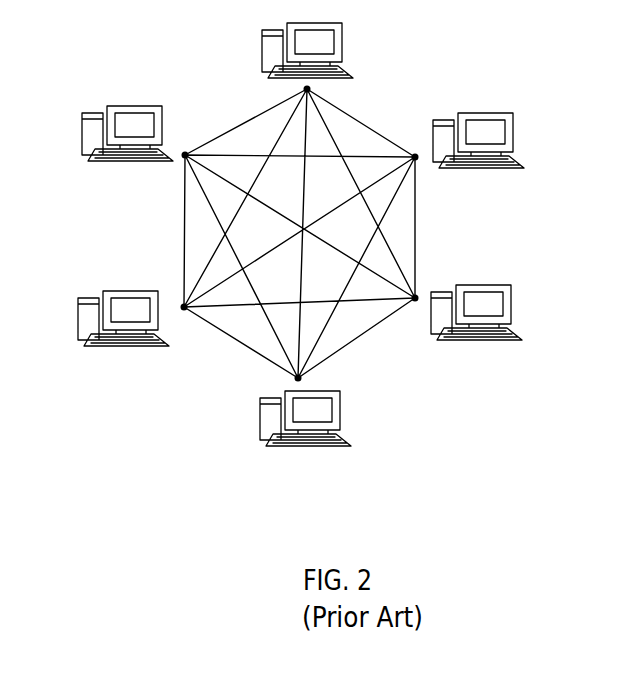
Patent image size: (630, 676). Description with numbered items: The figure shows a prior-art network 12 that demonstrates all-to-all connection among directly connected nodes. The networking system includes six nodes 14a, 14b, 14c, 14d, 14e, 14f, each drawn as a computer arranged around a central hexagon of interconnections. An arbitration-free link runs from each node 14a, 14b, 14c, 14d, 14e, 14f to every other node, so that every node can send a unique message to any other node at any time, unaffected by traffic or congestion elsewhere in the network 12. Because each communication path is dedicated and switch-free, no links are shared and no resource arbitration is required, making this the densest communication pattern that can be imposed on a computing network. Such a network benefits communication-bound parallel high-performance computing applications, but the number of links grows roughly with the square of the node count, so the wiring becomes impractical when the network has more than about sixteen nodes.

The network 12 is at (453, 423).
The node 14a is at (262, 58).
The node 14b is at (512, 137).
The node 14c is at (510, 312).
The node 14d is at (308, 447).
The node 14e is at (80, 336).
The node 14f is at (82, 137).